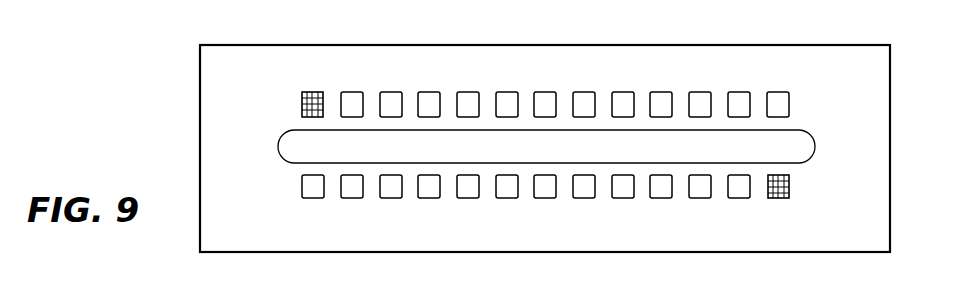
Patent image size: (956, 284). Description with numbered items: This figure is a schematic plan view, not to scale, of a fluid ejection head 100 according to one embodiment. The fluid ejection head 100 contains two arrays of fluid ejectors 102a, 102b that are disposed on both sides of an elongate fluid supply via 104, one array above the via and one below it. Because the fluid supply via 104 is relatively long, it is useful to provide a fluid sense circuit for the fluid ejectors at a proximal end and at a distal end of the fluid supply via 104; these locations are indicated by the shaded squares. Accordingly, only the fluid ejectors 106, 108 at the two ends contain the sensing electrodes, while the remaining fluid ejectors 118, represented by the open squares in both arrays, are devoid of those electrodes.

The fluid ejection head 100 is at (150, 135).
The array of fluid ejectors 102a is at (298, 106).
The array of fluid ejectors 102b is at (298, 187).
The elongate fluid supply via 104 is at (546, 146).
The fluid ejector 106 is at (313, 100).
The fluid ejector 108 is at (787, 180).
The fluid ejectors 118 is at (430, 98).